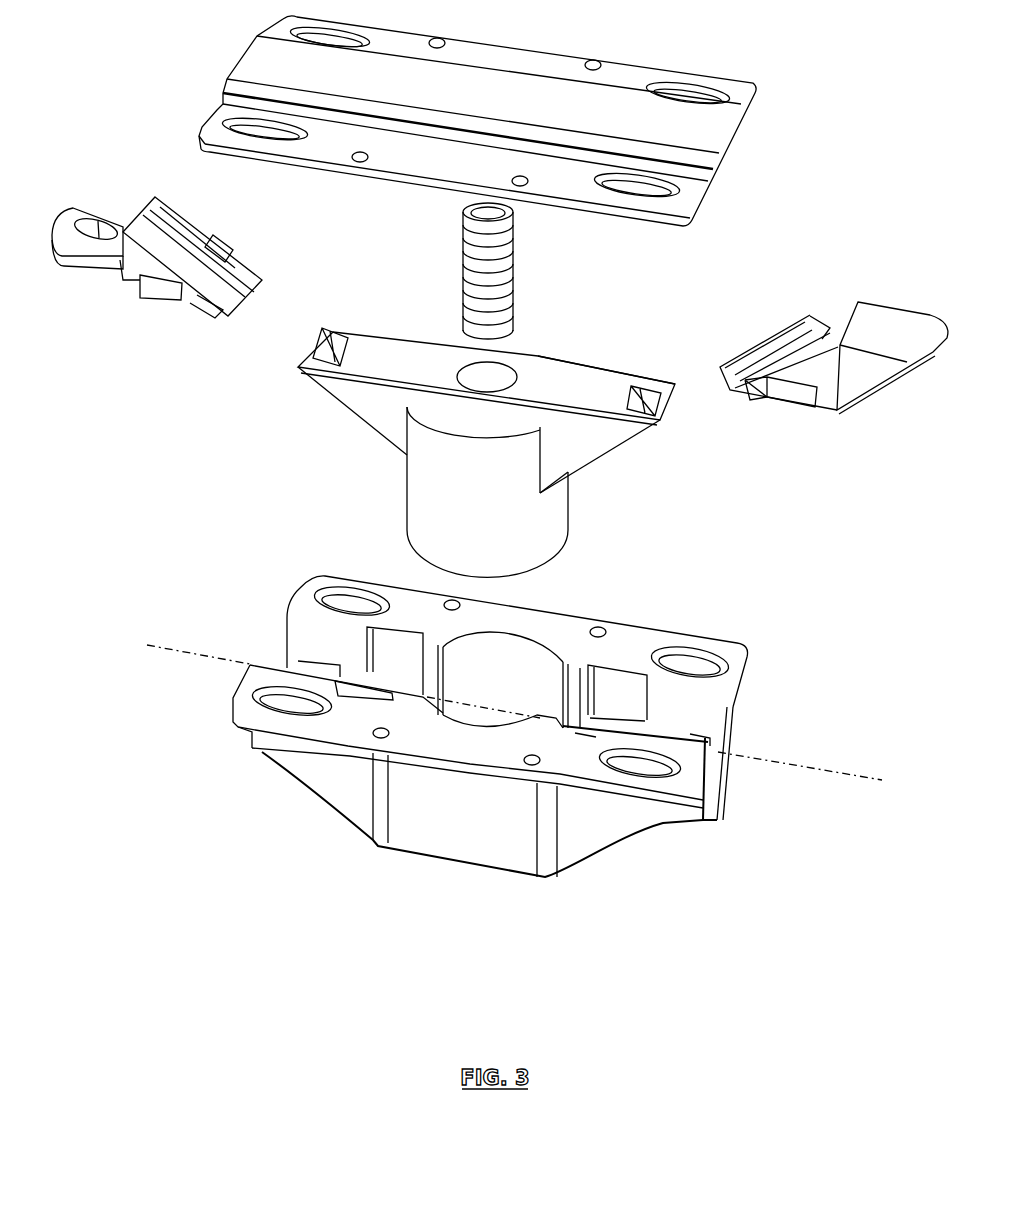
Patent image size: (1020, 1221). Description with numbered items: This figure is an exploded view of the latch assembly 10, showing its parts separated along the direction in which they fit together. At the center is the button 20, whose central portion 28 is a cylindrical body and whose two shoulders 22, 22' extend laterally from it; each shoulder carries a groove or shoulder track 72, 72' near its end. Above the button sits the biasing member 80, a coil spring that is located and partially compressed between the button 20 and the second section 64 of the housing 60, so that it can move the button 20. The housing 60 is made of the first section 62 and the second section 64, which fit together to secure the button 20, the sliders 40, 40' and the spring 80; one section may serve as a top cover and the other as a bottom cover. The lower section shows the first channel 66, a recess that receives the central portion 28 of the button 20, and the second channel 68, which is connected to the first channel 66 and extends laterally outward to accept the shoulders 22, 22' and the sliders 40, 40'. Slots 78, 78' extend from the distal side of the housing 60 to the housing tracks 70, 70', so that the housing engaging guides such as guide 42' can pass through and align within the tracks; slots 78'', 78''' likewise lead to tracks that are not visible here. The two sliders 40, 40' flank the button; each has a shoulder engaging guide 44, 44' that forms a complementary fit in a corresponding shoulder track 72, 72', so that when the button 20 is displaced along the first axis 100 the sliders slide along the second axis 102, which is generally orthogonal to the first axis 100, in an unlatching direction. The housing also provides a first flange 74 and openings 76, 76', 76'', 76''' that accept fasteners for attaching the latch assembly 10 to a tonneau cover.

The latch assembly 10 is at (180, 838).
The button 20 is at (540, 527).
The shoulder 22 is at (486, 423).
The shoulder 22' is at (606, 335).
The central portion 28 is at (417, 492).
The slider 40 is at (157, 304).
The slider 40' is at (834, 407).
The housing engaging guide 42' is at (777, 427).
The shoulder engaging guide 44 is at (500, 317).
The clip tab 44' is at (170, 329).
The housing 60 is at (517, 506).
The first section 62 is at (668, 863).
The second section 64 is at (590, 110).
The first channel 66 is at (532, 680).
The second channel 68 is at (737, 766).
The housing track 70 is at (270, 629).
The housing track 70' is at (750, 701).
The shoulder track 72 is at (340, 321).
The second tab 72' is at (639, 364).
The first flange 74 is at (277, 720).
The opening 76 is at (287, 558).
The opening 76' is at (729, 634).
The opening 76'' is at (696, 816).
The opening 76''' is at (220, 701).
The slot 78 is at (368, 606).
The slot 78' is at (656, 655).
The slot 78'' is at (606, 852).
The slot 78''' is at (349, 796).
The biasing member 80 is at (460, 235).
The first axis 100 is at (487, 470).
The second axis 102 is at (538, 724).